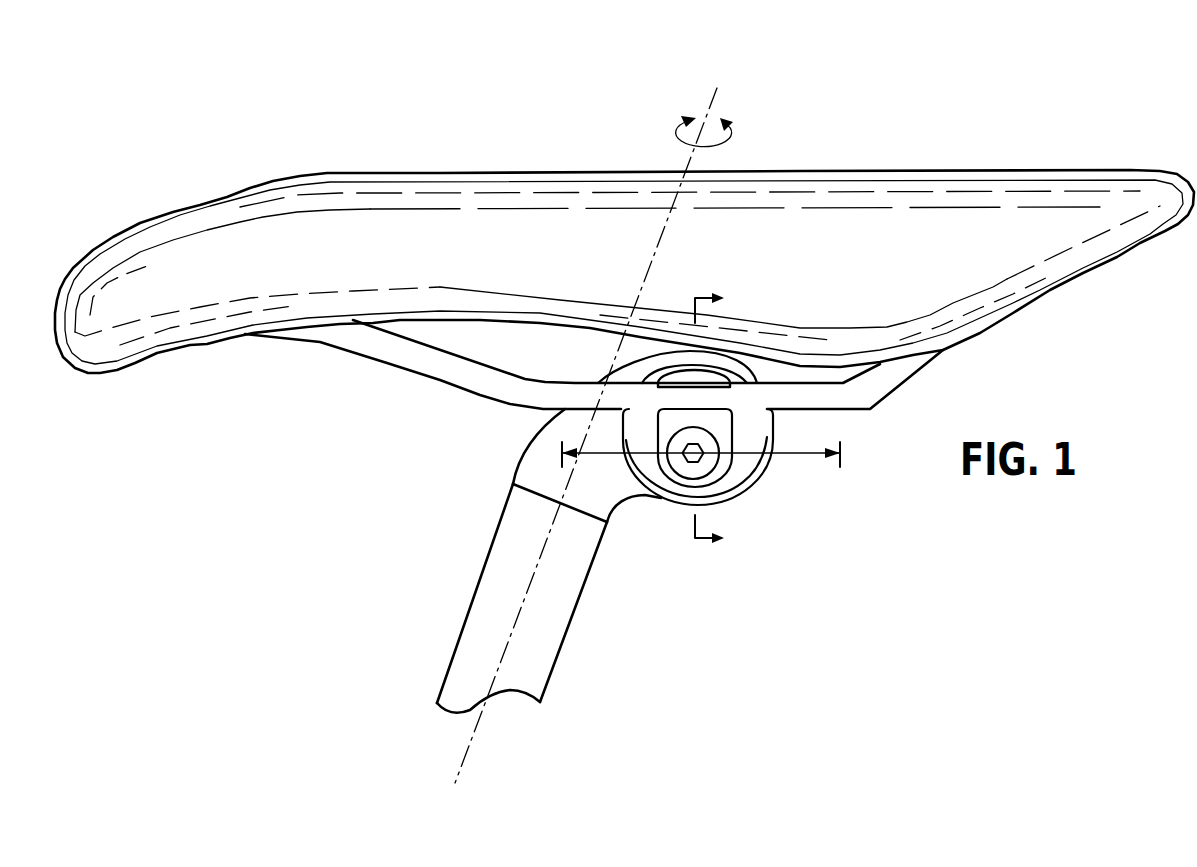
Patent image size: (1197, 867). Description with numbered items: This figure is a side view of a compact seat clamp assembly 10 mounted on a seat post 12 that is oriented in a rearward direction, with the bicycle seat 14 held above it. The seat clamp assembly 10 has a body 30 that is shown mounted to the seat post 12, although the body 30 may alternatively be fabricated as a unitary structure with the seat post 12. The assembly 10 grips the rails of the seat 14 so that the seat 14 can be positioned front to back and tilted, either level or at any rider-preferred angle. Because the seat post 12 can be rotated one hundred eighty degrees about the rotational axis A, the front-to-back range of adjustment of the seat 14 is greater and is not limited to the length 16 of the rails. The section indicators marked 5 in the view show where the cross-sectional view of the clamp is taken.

The saddle 14 is at (508, 127).
The seat post 12 is at (483, 608).
The seat post head 30 is at (535, 470).
The seat clamp assembly 10 is at (765, 500).
The clamp width dimension 16 is at (800, 455).
The rotation axis A is at (710, 102).
The section line 5- 5 is at (718, 419).